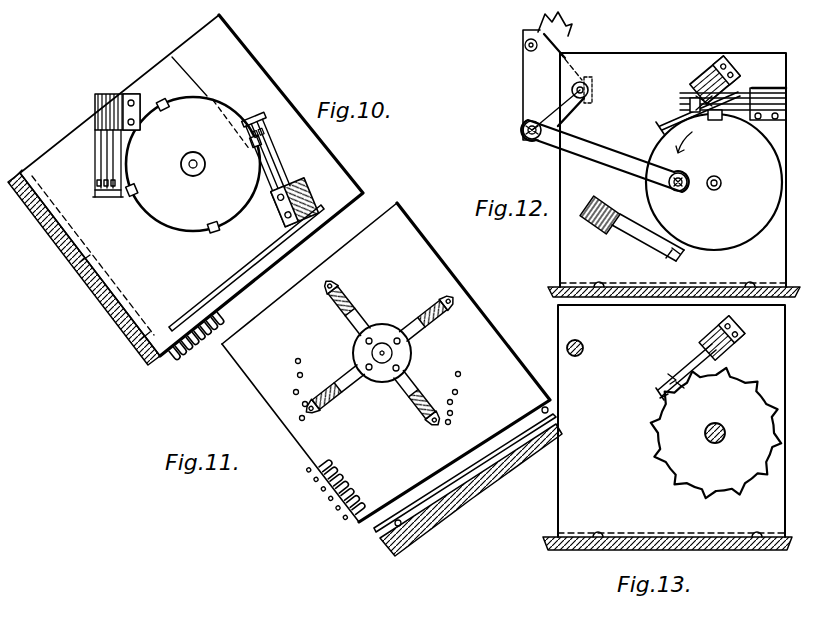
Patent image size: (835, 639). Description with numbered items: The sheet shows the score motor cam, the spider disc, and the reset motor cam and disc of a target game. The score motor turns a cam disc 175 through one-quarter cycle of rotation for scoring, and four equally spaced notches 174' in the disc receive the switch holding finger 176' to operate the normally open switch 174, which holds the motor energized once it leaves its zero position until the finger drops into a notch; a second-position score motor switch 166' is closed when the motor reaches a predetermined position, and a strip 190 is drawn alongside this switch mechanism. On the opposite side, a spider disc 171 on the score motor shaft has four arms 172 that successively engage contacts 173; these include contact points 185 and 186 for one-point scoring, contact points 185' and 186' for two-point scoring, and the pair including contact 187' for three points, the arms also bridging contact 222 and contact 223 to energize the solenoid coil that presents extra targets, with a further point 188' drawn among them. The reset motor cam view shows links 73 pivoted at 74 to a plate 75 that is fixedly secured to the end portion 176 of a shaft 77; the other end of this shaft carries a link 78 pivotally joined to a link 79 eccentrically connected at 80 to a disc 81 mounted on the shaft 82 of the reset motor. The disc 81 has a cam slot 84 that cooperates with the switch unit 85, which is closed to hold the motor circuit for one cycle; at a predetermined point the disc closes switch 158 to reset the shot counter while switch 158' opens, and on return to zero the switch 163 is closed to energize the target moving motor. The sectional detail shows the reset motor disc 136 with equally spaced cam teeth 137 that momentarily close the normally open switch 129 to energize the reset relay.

In FIG. 10, the guide strip 190 is at (97, 152).
In FIG. 10, the second-position score motor switch 166' is at (117, 222).
In FIG. 10, the notches 174' is at (194, 165).
In FIG. 10, the cam disc 175 is at (208, 90).
In FIG. 10, the switch holding finger 176' is at (248, 99).
In FIG. 10, the normally open switch 174 is at (285, 119).
In FIG. 10, the end portion of shaft 176 is at (303, 139).
In FIG. 11, the spider disc 171 is at (394, 322).
In FIG. 11, the arms 172 is at (352, 304).
In FIG. 11, the contacts 173 is at (294, 378).
In FIG. 11, the contact point 185' is at (322, 379).
In FIG. 11, the contact point 185 is at (314, 433).
In FIG. 11, the contact point 186' is at (432, 389).
In FIG. 11, the contact point 186 is at (463, 415).
In FIG. 11, the contact 187' is at (277, 362).
In FIG. 11, the hole 188' is at (473, 370).
In FIG. 11, the contact 222 is at (457, 371).
In FIG. 11, the contact 223 is at (299, 358).
In FIG. 12, the links 73 is at (538, 30).
In FIG. 12, the pivot 74 is at (526, 48).
In FIG. 12, the plate 75 is at (548, 93).
In FIG. 12, the shaft 77 is at (586, 82).
In FIG. 13, the shaft 77 is at (584, 348).
In FIG. 12, the link 78 is at (568, 116).
In FIG. 12, the link 79 is at (590, 152).
In FIG. 12, the eccentric connection 80 is at (670, 186).
In FIG. 12, the disc 81 is at (754, 225).
In FIG. 12, the shaft 82 is at (722, 184).
In FIG. 13, the shaft 82 is at (725, 427).
In FIG. 12, the cam slot 84 is at (714, 121).
In FIG. 12, the switch unit 85 is at (767, 98).
In FIG. 12, the normally open switch 129 is at (722, 68).
In FIG. 13, the normally open switch 129 is at (690, 352).
In FIG. 12, the switch 163 is at (680, 112).
In FIG. 12, the switch 158' is at (620, 237).
In FIG. 12, the normally open switch 158 is at (666, 247).
In FIG. 13, the disc 136 is at (700, 467).
In FIG. 13, the cam teeth 137 is at (666, 404).